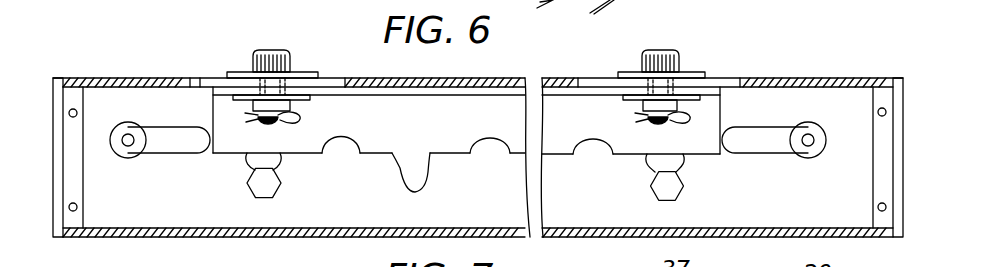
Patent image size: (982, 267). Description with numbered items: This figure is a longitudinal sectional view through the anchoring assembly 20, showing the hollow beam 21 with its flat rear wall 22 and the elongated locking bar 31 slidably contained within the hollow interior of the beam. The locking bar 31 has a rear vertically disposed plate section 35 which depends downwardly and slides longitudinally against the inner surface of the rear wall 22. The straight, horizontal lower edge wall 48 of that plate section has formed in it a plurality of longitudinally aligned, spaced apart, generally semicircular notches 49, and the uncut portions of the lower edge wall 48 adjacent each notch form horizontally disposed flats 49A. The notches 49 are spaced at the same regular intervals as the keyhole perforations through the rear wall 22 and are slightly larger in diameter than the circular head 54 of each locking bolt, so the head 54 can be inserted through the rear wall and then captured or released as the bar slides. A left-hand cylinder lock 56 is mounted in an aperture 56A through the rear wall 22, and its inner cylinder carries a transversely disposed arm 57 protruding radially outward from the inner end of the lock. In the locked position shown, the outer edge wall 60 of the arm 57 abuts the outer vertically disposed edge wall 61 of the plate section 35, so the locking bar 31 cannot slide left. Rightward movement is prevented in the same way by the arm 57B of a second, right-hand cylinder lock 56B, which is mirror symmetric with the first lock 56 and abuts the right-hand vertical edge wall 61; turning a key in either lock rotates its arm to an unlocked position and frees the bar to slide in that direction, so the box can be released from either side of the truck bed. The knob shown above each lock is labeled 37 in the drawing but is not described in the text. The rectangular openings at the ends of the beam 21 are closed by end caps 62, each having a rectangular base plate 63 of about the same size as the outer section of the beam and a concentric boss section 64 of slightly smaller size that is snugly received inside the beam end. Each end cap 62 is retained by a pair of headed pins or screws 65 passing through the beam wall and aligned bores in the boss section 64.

The anchoring assembly 20 is at (790, 69).
The hollow beam 21 is at (817, 78).
The rear wall 22 is at (132, 212).
The locking bar 31 is at (397, 165).
The rear vertically disposed plate section 35 is at (433, 123).
The adjustment knob 37 is at (295, 62).
The lower edge wall 48 is at (305, 157).
The notches 49 is at (490, 147).
The flats 49A is at (253, 158).
The head 54 is at (262, 199).
The cylinder lock 56 is at (127, 158).
The aperture 56A is at (130, 121).
The second cylinder lock 56B is at (838, 118).
The arm 57 is at (157, 155).
The arm 57B is at (760, 155).
The outer edge wall 60 is at (203, 106).
The outer vertically disposed edge wall 61 is at (210, 154).
The end cap 62 is at (53, 82).
The base plate 63 is at (62, 80).
The boss section 64 is at (80, 99).
The headed pins or screws 65 is at (72, 203).